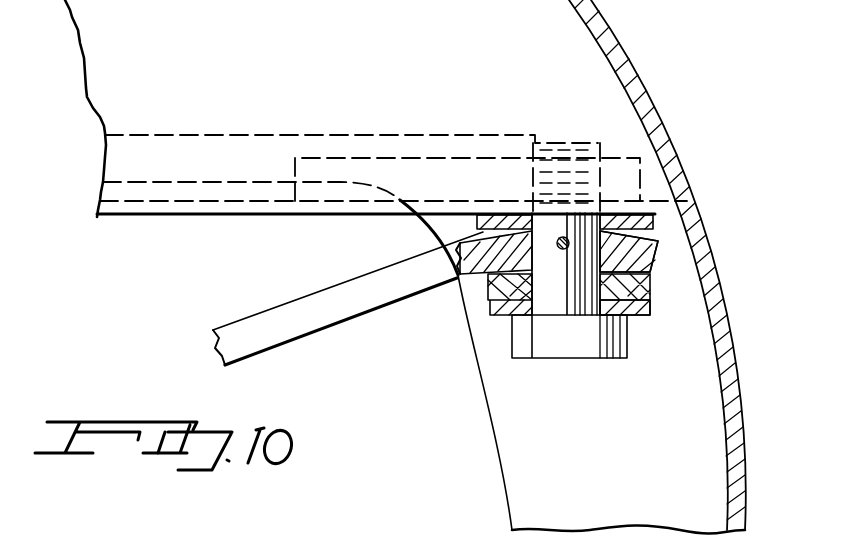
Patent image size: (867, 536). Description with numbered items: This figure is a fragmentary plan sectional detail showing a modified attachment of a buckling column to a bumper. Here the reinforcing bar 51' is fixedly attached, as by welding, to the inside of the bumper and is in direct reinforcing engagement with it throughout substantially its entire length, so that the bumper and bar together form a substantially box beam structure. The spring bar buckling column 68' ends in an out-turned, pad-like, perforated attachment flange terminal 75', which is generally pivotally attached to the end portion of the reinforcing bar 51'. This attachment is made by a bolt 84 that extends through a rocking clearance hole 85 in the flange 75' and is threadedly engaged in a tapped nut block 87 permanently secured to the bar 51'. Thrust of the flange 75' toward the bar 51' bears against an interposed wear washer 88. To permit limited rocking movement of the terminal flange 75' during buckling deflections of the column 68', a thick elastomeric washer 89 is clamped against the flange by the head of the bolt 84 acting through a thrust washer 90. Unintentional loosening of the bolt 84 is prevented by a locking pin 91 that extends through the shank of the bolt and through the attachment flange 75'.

The reinforcing bar 51' is at (357, 108).
The spring bar buckling column 68' is at (348, 298).
The attachment flange terminal 75' is at (645, 260).
The bolt 84 is at (570, 335).
The rocking clearance hole 85 is at (608, 242).
The tapped nut block 87 is at (642, 172).
The wear washer 88 is at (648, 213).
The elastomeric washer 89 is at (650, 296).
The thrust washer 90 is at (638, 318).
The locking pin 91 is at (560, 250).